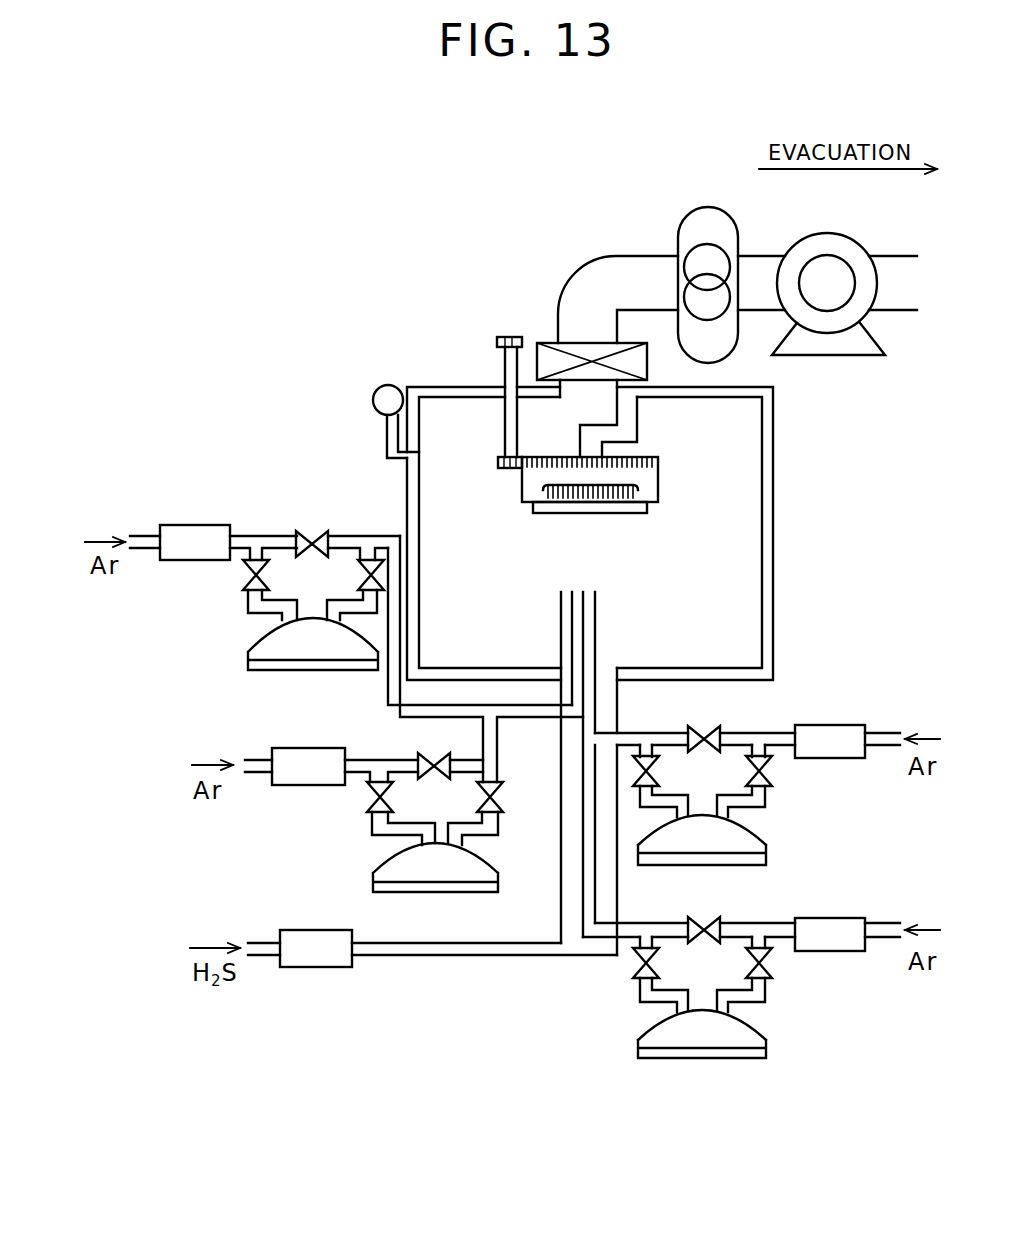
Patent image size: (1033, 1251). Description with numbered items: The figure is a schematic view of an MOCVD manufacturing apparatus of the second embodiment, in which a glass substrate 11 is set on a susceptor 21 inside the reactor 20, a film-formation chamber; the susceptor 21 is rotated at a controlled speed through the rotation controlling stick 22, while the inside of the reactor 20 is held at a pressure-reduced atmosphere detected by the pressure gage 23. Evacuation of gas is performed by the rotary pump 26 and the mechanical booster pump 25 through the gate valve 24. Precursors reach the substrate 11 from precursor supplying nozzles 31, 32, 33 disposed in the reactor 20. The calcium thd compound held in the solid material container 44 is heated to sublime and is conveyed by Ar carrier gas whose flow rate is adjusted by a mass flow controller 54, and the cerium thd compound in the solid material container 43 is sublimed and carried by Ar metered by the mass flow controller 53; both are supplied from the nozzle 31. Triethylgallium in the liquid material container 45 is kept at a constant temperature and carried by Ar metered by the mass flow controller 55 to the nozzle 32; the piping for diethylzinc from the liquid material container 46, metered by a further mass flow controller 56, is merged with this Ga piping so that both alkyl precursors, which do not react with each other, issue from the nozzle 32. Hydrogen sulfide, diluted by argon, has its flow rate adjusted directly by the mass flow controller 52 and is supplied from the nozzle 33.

The glass substrate 11 is at (542, 513).
The reactor 20 is at (775, 470).
The susceptor 21 is at (660, 477).
The rotation controlling stick 22 is at (505, 335).
The pressure gage 23 is at (372, 403).
The gate valve 24 is at (545, 343).
The mechanical booster pump 25 is at (678, 230).
The rotary pump 26 is at (832, 357).
The precursor supplying nozzle 31 is at (597, 622).
The precursor supplying nozzle 32 is at (568, 623).
The precursor supplying nozzle 33 is at (620, 705).
The solid material container 43 is at (762, 836).
The solid material container 44 is at (762, 1032).
The liquid material container 45 is at (375, 867).
The liquid material container 46 is at (257, 642).
The mass flow controller 52 is at (327, 968).
The mass flow controller 53 is at (840, 723).
The mass flow controller 54 is at (847, 951).
The mass flow controller 55 is at (302, 747).
The Ar mass flow controller 56 is at (203, 523).